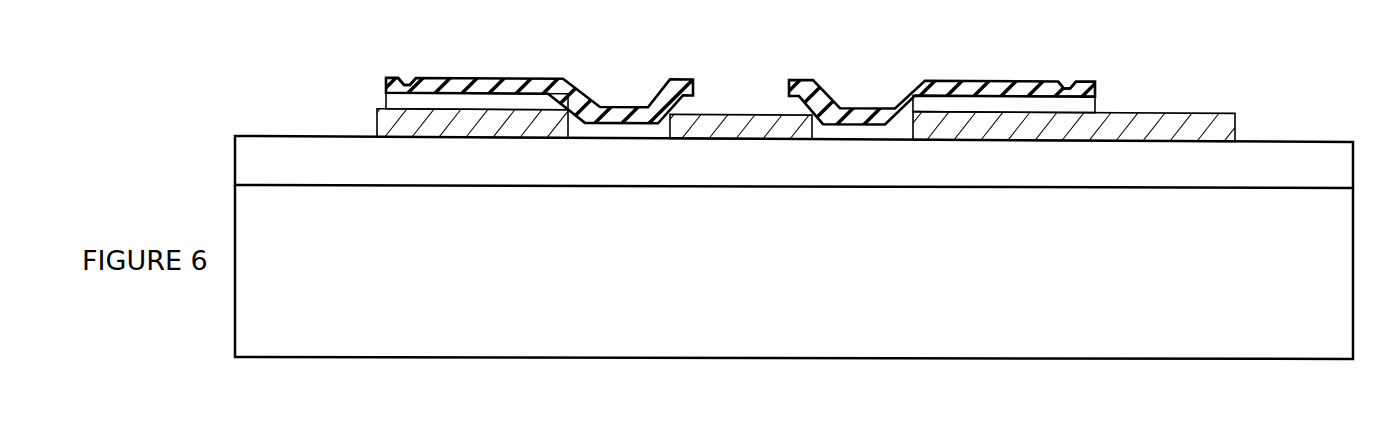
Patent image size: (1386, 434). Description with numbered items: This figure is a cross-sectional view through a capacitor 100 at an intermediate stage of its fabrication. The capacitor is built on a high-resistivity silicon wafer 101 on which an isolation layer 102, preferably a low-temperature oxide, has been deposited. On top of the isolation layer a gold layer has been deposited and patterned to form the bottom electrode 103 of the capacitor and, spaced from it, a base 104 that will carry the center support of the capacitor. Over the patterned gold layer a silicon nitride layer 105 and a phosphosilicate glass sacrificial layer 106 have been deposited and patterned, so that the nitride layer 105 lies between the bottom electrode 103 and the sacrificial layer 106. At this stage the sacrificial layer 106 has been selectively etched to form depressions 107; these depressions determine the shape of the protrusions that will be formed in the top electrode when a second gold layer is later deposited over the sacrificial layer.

The capacitor 100 is at (137, 103).
The high-resistivity silicon wafer 101 is at (685, 309).
The isolation layer 102 is at (685, 178).
The bottom electrode 103 is at (378, 117).
The base 104 is at (768, 132).
The silicon nitride layer 105 is at (1086, 105).
The sacrificial layer 106 is at (546, 82).
The depressions 107 is at (410, 62).